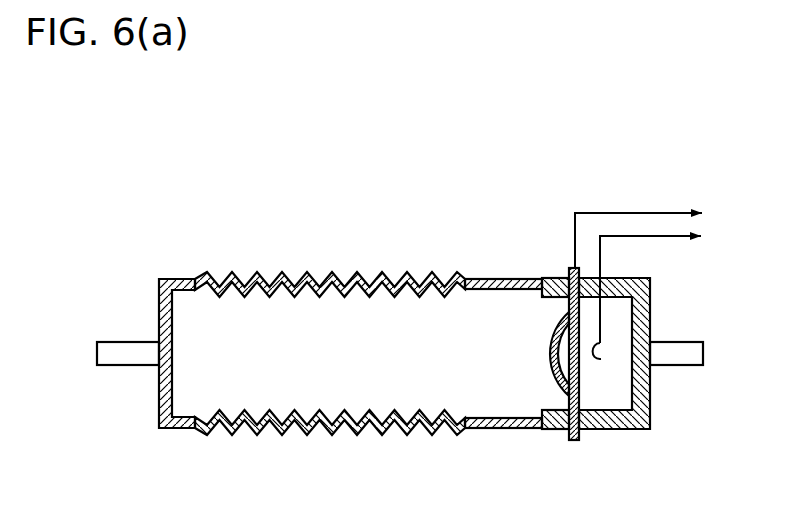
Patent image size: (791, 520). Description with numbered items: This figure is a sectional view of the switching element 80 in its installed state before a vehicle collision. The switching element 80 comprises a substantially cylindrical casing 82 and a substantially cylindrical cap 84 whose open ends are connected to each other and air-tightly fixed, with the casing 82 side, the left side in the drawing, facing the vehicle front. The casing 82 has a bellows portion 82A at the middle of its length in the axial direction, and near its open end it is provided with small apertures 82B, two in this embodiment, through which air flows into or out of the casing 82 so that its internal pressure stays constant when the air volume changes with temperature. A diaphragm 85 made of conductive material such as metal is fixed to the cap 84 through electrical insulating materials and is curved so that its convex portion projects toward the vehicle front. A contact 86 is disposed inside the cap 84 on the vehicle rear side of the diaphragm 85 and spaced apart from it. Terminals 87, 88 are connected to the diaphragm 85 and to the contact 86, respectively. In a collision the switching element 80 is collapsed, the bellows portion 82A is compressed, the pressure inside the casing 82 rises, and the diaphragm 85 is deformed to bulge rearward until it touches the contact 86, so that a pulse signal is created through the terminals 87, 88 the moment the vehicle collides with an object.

The switching element 80 is at (410, 228).
The casing 82 is at (178, 440).
The bellows portion 82A is at (229, 276).
The small apertures 82B is at (503, 278).
The cap 84 is at (603, 430).
The diaphragm 85 is at (551, 326).
The contact 86 is at (604, 360).
The terminal 87 is at (678, 212).
The terminal 88 is at (688, 237).